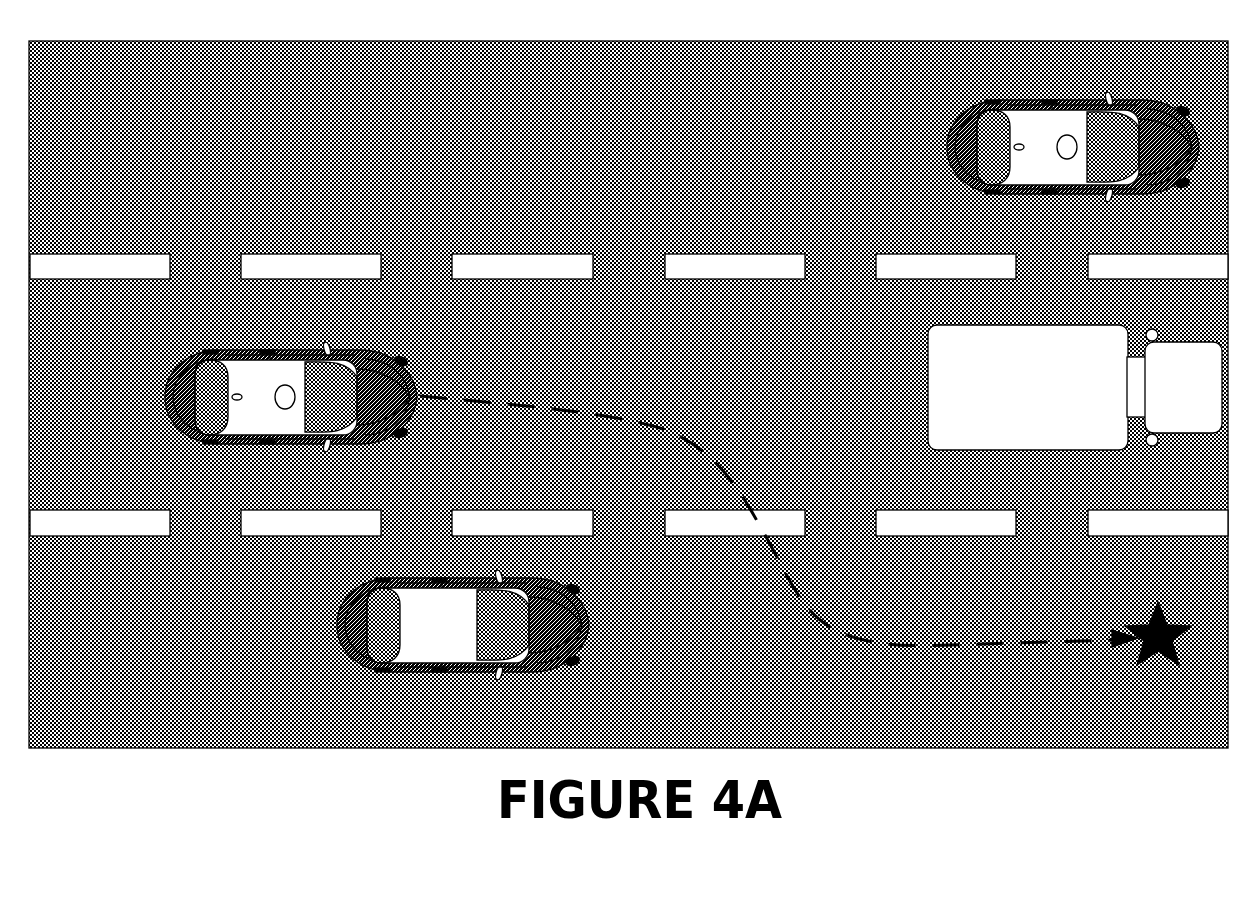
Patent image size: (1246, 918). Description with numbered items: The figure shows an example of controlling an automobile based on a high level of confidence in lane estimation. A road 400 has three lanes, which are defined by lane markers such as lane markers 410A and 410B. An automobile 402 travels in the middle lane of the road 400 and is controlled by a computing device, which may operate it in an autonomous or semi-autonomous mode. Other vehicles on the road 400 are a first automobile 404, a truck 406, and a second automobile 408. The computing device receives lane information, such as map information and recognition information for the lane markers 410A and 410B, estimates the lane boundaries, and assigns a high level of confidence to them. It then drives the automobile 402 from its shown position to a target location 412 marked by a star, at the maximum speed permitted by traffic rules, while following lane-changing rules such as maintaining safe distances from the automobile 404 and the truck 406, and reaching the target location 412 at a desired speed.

The road 400 is at (330, 42).
The automobile 402 is at (167, 385).
The first automobile 404 is at (575, 660).
The truck 406 is at (928, 375).
The second automobile 408 is at (947, 148).
The lane marker 410A is at (253, 254).
The lane marker 410B is at (253, 536).
The target location 412 is at (1178, 660).